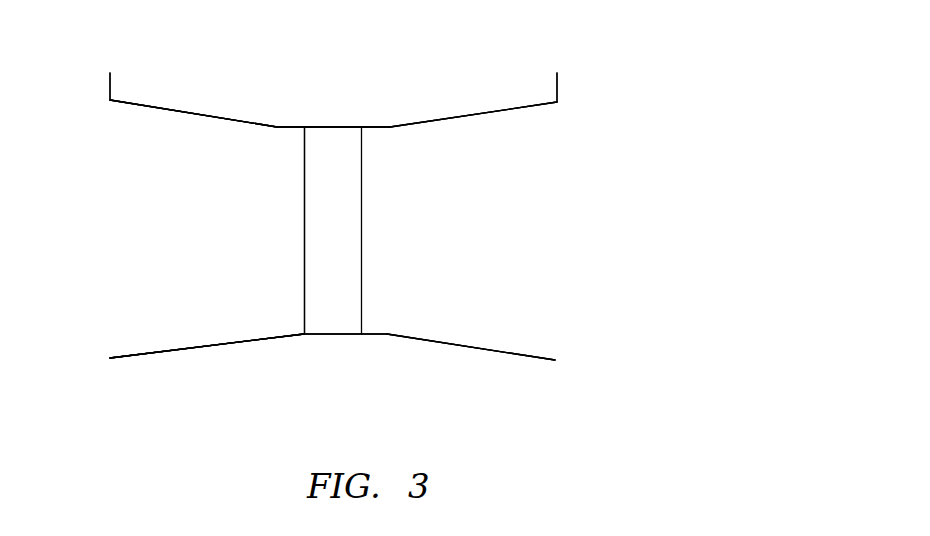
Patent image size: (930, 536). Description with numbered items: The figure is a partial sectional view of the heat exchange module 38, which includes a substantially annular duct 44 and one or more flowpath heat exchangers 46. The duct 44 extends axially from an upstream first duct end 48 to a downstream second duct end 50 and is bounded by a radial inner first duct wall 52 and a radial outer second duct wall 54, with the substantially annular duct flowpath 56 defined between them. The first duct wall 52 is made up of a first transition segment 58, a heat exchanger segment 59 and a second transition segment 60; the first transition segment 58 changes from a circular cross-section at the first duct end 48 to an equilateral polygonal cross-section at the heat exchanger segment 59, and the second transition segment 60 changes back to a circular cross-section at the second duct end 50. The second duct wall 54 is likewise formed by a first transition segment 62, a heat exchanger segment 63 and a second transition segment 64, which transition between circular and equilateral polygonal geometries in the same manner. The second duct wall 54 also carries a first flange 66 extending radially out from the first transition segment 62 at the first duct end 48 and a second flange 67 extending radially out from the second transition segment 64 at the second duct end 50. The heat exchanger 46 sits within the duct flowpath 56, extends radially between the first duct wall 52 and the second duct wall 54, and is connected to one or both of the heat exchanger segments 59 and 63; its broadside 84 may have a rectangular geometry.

The heat exchange module 38 is at (629, 72).
The duct 44 is at (141, 103).
The flowpath heat exchanger 46 is at (335, 135).
The first duct end 48 is at (112, 360).
The second duct end 50 is at (555, 362).
The first duct wall 52 is at (176, 352).
The second duct wall 54 is at (187, 112).
The duct flowpath 56 is at (136, 242).
The first transition segment 58 is at (231, 345).
The heat exchanger segment 59 is at (293, 337).
The second transition segment 60 is at (437, 346).
The first transition segment 62 is at (240, 120).
The heat exchanger segment 63 is at (293, 126).
The second transition segment 64 is at (445, 118).
The first flange 66 is at (110, 87).
The second flange 67 is at (557, 90).
The broadside 84 is at (304, 261).